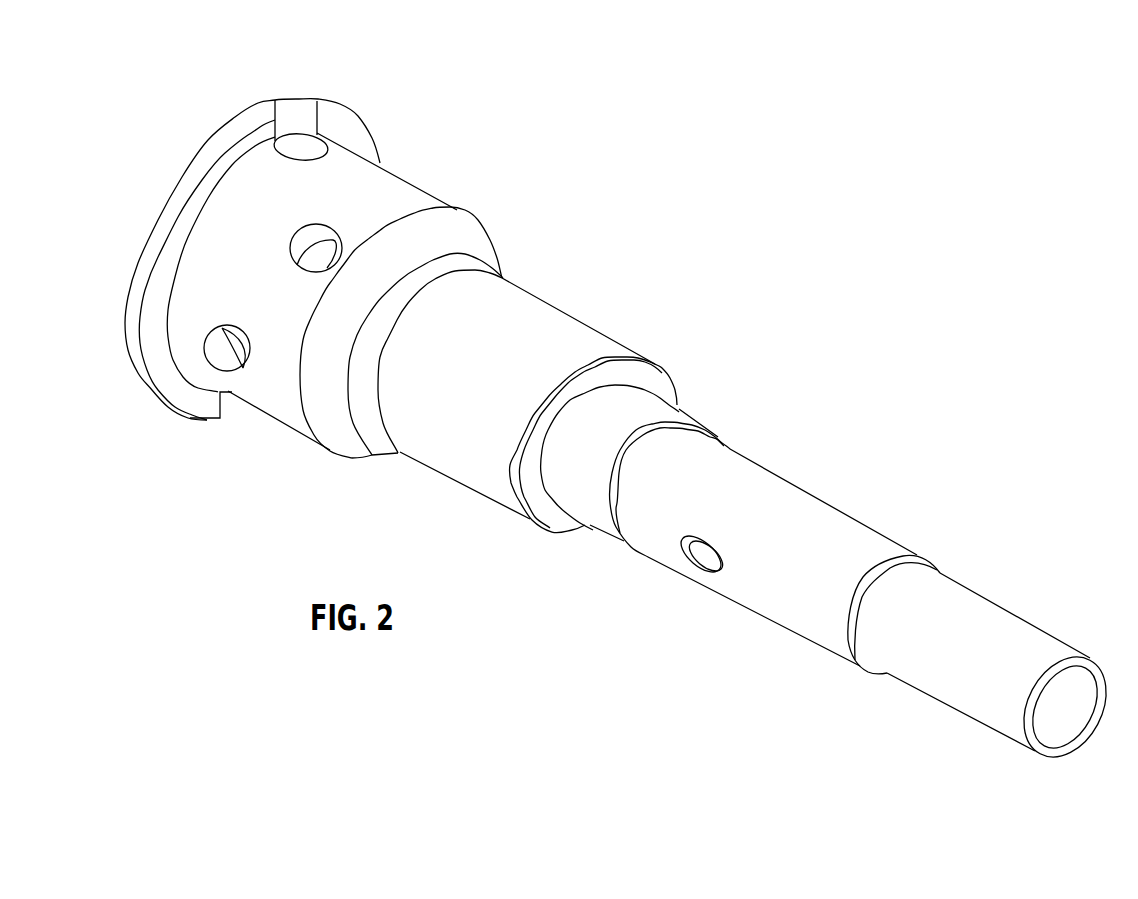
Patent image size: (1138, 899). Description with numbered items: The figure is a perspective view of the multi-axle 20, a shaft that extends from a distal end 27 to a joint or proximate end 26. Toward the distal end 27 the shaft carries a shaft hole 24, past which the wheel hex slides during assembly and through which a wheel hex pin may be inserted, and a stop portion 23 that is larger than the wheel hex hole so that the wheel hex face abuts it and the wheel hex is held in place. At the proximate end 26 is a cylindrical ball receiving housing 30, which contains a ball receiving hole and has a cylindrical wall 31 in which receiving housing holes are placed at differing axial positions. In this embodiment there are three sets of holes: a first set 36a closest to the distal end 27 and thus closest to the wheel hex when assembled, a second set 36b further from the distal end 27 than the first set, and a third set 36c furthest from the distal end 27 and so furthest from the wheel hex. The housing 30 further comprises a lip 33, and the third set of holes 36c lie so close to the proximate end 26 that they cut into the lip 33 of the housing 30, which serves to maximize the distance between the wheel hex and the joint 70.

The multi-axle 20 is at (823, 174).
The joint 70 is at (131, 85).
The joint (proximate) end 26 is at (132, 270).
The cylindrical ball receiving housing 30 is at (198, 253).
The cylindrical wall 31 is at (387, 180).
The lip 33 is at (276, 103).
The first hole 36a is at (343, 240).
The second hole 36b is at (238, 363).
The third set of holes 36c is at (298, 147).
The stop portion 23 is at (650, 377).
The shaft hole 24 is at (700, 557).
The distal end 27 is at (965, 733).